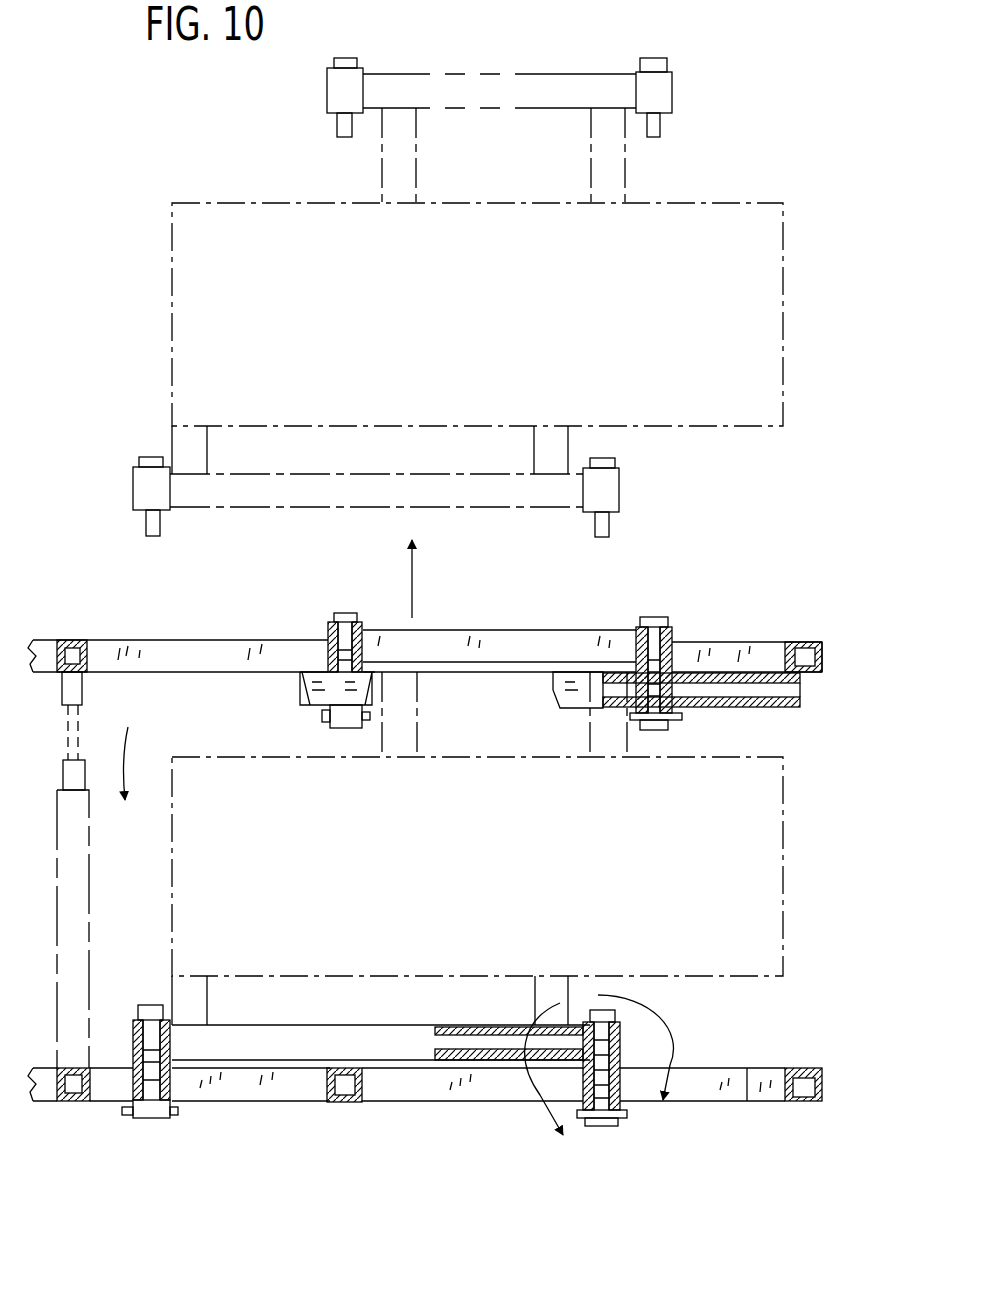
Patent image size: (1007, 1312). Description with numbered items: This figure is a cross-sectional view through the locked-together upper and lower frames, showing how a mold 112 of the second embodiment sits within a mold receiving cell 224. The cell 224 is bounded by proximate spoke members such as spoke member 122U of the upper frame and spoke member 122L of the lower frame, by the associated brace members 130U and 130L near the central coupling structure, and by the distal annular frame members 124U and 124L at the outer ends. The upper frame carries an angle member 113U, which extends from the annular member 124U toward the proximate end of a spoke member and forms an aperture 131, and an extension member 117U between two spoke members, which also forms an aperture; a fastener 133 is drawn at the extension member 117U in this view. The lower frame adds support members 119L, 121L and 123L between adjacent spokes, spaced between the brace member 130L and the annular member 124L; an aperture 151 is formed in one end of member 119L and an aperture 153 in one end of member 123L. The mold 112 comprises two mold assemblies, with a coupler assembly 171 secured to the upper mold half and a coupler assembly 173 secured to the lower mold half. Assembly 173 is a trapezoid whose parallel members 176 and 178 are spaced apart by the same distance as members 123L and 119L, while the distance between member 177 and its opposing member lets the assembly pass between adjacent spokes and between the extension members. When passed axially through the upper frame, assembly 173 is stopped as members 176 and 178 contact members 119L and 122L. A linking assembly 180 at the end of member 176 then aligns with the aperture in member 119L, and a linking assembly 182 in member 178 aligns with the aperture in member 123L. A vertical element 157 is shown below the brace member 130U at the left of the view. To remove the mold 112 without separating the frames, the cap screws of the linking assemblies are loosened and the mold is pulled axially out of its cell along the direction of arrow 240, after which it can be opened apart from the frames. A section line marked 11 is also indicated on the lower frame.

The mold 112 is at (773, 398).
The angle member 113U is at (745, 707).
The extension member 117U is at (308, 700).
The support member 119L is at (173, 1085).
The support member 121L is at (365, 1090).
The spoke member 122L is at (730, 1103).
The spoke member 122U is at (683, 655).
The support member 123L is at (620, 1097).
The distal annular frame member 124L is at (822, 1078).
The distal annular frame member 124U is at (822, 650).
The brace member 130L is at (52, 1100).
The brace member 130U is at (70, 648).
The aperture 131 is at (688, 690).
The clamp bolt 133 is at (362, 692).
The aperture 151 is at (148, 1115).
The aperture 153 is at (620, 1068).
The actuator cylinder 157 is at (80, 885).
The coupler assembly 171 is at (318, 490).
The coupler assembly 173 is at (541, 88).
The member 176 is at (175, 1025).
The member 177 is at (495, 1062).
The member 178 is at (598, 1003).
The linking assembly 180 is at (120, 1020).
The linking assembly 182 is at (620, 1040).
The mold receiving cell 224 is at (116, 747).
The arrow 240 is at (413, 590).
The section line 11- 11 is at (599, 1079).